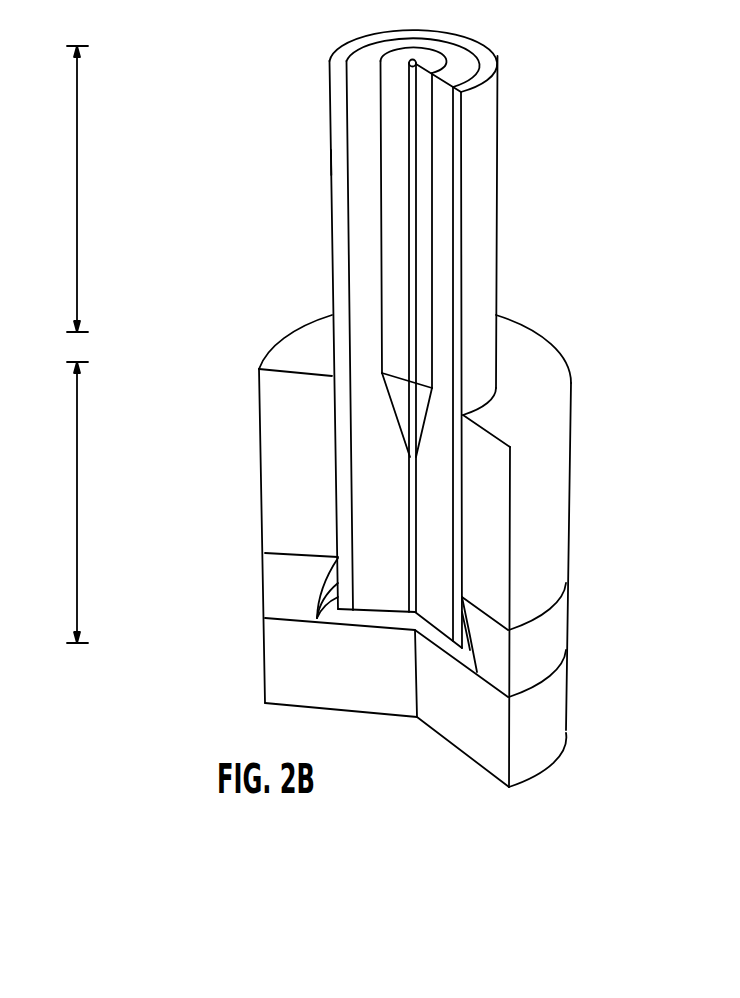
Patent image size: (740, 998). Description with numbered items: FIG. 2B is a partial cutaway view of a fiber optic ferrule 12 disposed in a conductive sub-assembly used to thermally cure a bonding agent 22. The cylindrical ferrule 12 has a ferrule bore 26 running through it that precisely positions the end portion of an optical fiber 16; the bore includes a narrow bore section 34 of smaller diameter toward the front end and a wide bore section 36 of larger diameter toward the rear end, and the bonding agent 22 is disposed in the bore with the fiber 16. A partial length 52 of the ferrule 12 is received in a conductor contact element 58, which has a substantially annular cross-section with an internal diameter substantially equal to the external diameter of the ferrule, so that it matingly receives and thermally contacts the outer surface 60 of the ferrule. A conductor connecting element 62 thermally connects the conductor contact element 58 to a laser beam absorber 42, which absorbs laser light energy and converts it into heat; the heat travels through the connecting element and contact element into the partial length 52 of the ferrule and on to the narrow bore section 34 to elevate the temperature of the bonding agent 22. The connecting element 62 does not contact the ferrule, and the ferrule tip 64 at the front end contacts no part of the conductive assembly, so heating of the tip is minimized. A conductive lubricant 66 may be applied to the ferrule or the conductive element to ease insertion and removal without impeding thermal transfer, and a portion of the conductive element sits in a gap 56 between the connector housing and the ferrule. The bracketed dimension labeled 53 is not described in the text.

The ferrule 12 is at (362, 117).
The optical fiber 16 is at (417, 267).
The bonding agent 22 is at (417, 407).
The ferrule bore 26 is at (417, 490).
The narrow bore section 34 is at (417, 543).
The wide bore section 36 is at (433, 227).
The laser beam absorber 42 is at (285, 662).
The partial length of ferrule 52 is at (180, 352).
The ferrule length region 53 is at (180, 48).
The gap 56 is at (395, 626).
The conductor contact element 58 is at (273, 483).
The outer surface 60 is at (486, 56).
The conductor connecting element 62 is at (275, 597).
The ferrule tip 64 is at (378, 616).
The conductive lubricant 66 is at (332, 162).